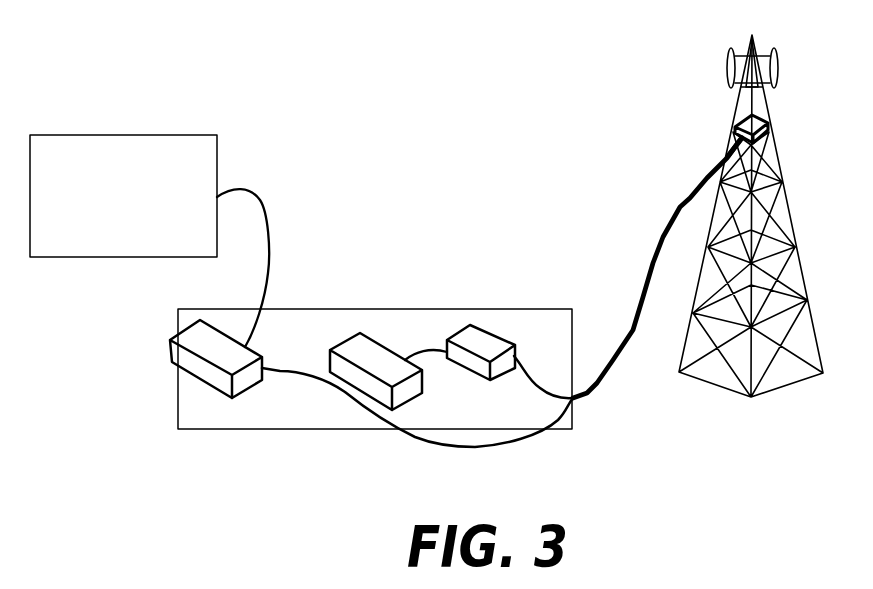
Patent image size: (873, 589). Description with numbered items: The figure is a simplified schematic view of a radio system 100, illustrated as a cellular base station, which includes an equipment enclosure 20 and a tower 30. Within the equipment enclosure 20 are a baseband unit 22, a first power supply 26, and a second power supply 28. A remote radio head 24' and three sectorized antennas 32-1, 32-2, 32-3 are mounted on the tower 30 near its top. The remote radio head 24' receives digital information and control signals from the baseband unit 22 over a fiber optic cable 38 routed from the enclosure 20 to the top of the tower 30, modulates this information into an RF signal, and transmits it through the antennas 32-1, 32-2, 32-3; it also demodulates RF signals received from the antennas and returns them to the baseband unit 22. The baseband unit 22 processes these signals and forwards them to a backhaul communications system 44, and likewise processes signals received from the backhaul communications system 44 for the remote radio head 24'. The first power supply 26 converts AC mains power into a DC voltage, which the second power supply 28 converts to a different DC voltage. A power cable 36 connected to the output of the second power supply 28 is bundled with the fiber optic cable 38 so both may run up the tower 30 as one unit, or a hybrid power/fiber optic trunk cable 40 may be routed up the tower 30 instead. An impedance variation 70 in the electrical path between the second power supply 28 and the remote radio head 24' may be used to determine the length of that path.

The radio system 100 is at (440, 263).
The backhaul communications system 44 is at (123, 196).
The equipment enclosure 20 is at (160, 390).
The baseband unit 22 is at (250, 378).
The first power supply 26 is at (377, 352).
The second power supply 28 is at (469, 325).
The power cable 36 is at (537, 382).
The fiber optic cable 38 is at (442, 448).
The hybrid power/fiber optic trunk cable 40 is at (678, 207).
The impedance variation 70 is at (727, 147).
The remote radio head 24' is at (708, 106).
The tower 30 is at (802, 270).
The sectorized antenna 32-1 is at (733, 63).
The sectorized antenna 32-2 is at (757, 87).
The sectorized antenna 32-3 is at (775, 53).